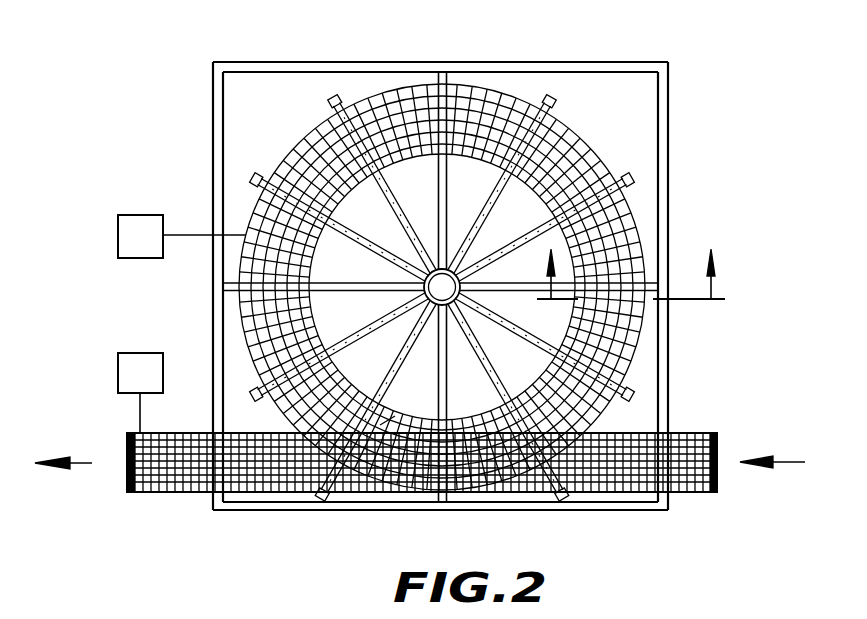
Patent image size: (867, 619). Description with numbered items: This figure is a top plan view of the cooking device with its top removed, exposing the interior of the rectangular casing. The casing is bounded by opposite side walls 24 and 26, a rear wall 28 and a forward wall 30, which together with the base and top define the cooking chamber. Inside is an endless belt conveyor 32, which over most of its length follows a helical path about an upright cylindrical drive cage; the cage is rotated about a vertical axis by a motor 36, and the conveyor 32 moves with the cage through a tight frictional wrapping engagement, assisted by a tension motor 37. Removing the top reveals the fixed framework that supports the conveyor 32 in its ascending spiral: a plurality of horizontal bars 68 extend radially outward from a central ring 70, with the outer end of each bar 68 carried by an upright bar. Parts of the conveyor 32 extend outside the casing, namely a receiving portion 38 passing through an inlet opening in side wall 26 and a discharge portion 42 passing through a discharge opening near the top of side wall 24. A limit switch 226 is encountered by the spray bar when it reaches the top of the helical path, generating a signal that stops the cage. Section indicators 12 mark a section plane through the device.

The section line 12- 12 is at (633, 296).
The side wall 24 is at (218, 115).
The side wall 26 is at (668, 112).
The rear wall 28 is at (568, 62).
The forward wall 30 is at (375, 511).
The endless belt conveyor 32 is at (248, 320).
The motor 36 is at (140, 217).
The tension motor 37 is at (118, 372).
The receiving portion 38 is at (399, 440).
The discharge portion 42 is at (127, 438).
The horizontal bars 68 is at (503, 188).
The central ring 70 is at (428, 266).
The limit switch 226 is at (380, 425).